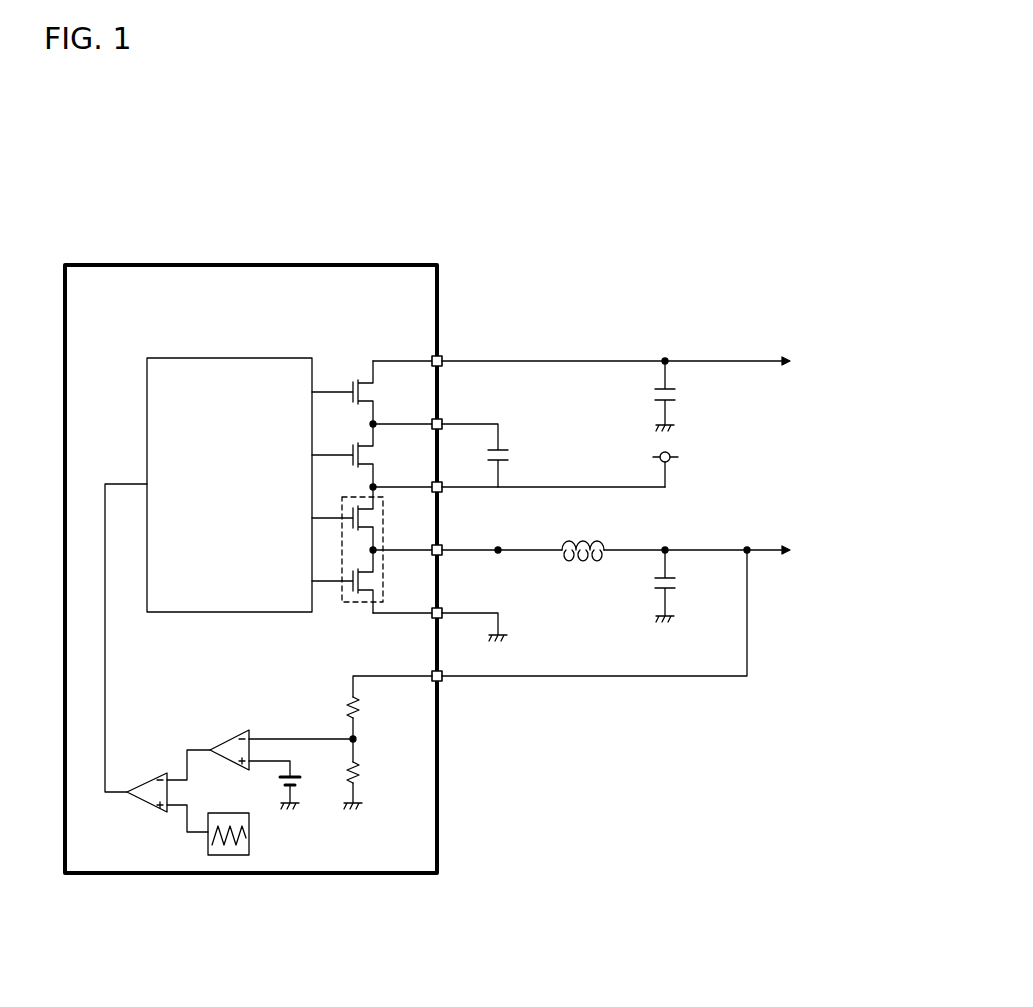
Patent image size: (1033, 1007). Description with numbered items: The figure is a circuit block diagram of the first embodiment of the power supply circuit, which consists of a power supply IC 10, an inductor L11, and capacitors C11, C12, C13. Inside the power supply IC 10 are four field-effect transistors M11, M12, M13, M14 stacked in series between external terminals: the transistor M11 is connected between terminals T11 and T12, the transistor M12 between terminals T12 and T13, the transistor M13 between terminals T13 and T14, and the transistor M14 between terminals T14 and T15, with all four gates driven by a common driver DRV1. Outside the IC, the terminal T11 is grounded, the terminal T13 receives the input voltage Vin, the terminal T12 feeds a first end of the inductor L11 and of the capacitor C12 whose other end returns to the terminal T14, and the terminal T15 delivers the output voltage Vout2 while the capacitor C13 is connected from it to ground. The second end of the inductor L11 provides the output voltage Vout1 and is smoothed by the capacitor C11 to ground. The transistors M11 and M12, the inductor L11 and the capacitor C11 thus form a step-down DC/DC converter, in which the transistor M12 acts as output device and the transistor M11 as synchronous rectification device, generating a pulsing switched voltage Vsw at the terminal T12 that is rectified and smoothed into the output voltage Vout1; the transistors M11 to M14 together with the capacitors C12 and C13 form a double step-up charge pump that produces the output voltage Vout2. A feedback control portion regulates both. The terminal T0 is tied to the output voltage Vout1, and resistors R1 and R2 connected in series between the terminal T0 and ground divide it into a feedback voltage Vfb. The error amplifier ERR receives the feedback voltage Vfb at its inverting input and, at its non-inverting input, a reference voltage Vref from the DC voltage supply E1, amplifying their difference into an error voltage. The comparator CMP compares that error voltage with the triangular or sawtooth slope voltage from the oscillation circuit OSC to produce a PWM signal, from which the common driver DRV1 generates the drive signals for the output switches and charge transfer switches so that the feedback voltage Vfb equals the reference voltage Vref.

The power supply IC 10 is at (250, 265).
The common driver DRV1 is at (229, 358).
The field-effect transistor M14 is at (374, 393).
The field-effect transistor M13 is at (374, 456).
The field-effect transistor M12 is at (374, 519).
The field-effect transistor M11 is at (374, 582).
The terminal T15 is at (443, 367).
The terminal T14 is at (443, 430).
The terminal T13 is at (443, 493).
The terminal T12 is at (443, 556).
The terminal T11 is at (443, 619).
The terminal T0 is at (443, 682).
The capacitor C13 is at (677, 392).
The capacitor C12 is at (509, 453).
The capacitor C11 is at (677, 581).
The inductor L11 is at (580, 538).
The resistor R1 is at (362, 708).
The resistor R2 is at (362, 772).
The DC voltage supply E1 is at (296, 780).
The error amplifier ERR is at (228, 737).
The comparator CMP is at (147, 777).
The oscillation circuit OSC is at (228, 811).
The output voltage Vout1 is at (725, 551).
The output voltage Vout2 is at (644, 362).
The input voltage Vin is at (682, 467).
The switched voltage Vsw is at (508, 561).
The feedback voltage Vfb is at (369, 739).
The reference voltage Vref is at (290, 764).